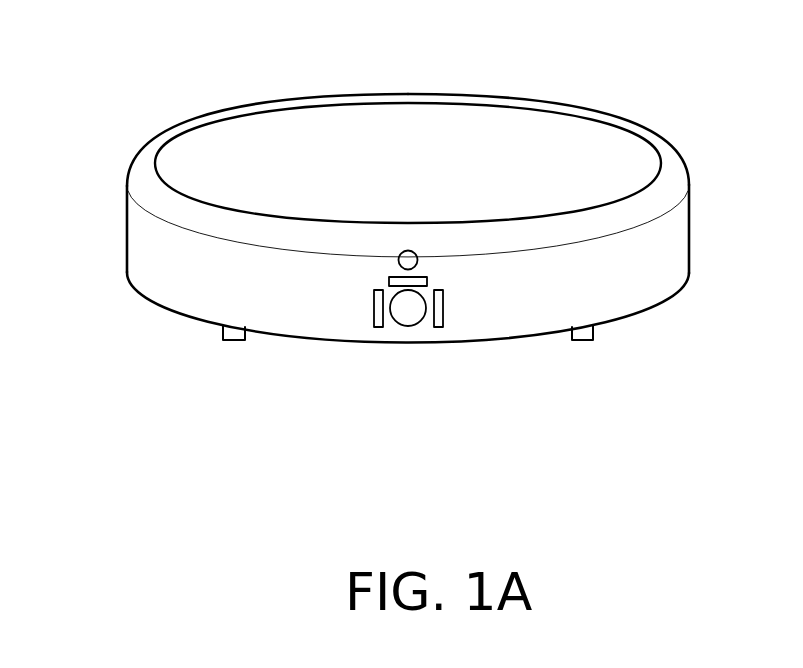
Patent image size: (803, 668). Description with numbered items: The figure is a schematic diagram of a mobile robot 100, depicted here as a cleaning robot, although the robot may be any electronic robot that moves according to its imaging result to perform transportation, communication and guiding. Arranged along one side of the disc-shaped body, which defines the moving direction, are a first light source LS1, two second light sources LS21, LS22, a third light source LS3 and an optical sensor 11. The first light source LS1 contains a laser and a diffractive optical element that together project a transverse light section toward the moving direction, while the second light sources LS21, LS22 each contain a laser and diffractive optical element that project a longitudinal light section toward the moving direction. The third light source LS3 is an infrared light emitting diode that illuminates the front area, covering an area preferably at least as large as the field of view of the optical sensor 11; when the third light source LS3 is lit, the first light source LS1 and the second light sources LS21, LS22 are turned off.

The mobile robot 100 is at (108, 56).
The first light source LS1 is at (396, 277).
The third light source LS3 is at (412, 250).
The optical sensor 11 is at (407, 312).
The second light source LS21 is at (378, 313).
The second light source LS22 is at (437, 313).